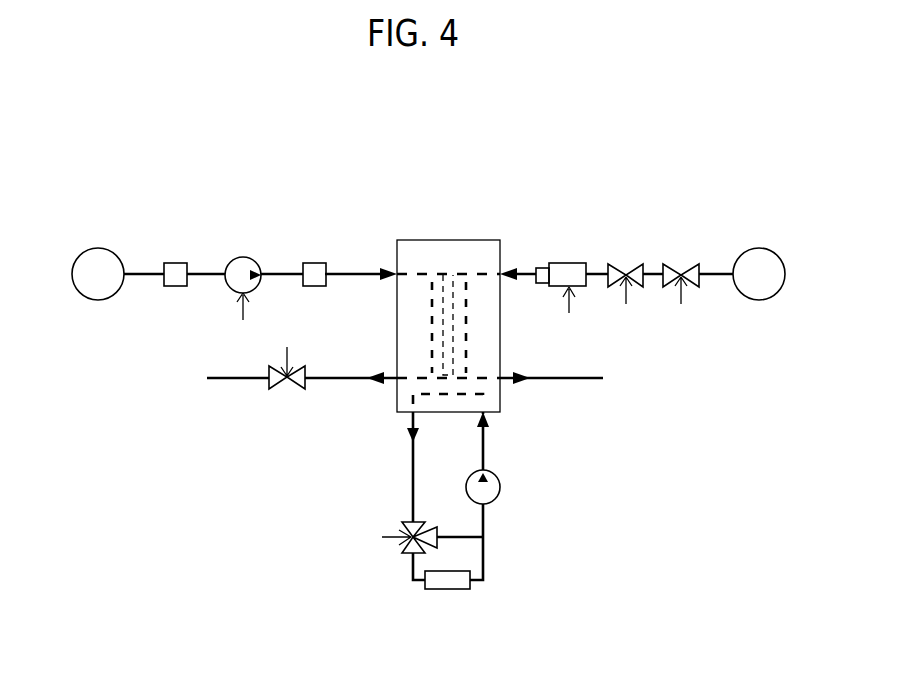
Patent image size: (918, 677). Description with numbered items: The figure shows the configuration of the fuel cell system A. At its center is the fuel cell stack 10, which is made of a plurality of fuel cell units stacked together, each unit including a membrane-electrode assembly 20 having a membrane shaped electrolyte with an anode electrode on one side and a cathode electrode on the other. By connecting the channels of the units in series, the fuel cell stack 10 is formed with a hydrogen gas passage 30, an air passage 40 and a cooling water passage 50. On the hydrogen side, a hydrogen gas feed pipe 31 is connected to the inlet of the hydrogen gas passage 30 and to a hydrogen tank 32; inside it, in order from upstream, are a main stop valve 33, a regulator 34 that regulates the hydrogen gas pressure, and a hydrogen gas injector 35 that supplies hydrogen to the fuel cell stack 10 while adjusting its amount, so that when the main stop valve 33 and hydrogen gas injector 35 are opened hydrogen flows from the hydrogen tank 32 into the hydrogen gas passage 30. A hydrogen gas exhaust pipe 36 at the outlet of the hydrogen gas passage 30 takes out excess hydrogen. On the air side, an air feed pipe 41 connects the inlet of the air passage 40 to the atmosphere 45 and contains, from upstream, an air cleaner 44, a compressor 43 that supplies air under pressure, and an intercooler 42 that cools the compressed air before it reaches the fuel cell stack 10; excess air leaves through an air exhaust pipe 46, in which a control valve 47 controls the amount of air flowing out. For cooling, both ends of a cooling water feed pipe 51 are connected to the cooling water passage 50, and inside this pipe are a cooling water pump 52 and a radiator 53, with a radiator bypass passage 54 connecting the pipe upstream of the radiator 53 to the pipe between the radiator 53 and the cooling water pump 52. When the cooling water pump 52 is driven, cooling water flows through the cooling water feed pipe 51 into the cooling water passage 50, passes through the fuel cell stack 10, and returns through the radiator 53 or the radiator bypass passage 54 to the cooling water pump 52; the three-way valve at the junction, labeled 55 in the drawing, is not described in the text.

The fuel cell system A is at (75, 157).
The fuel cell stack 10 is at (462, 240).
The membrane-electrode assembly 20 is at (432, 345).
The hydrogen gas passage 30 is at (485, 265).
The hydrogen gas feed pipe 31 is at (527, 282).
The hydrogen tank 32 is at (775, 249).
The main stop valve 33 is at (695, 262).
The regulator 34 is at (640, 262).
The hydrogen gas injector 35 is at (578, 262).
The hydrogen gas exhaust pipe 36 is at (550, 381).
The air passage 40 is at (415, 388).
The air feed pipe 41 is at (362, 270).
The intercooler 42 is at (313, 262).
The compressor 43 is at (240, 257).
The air cleaner 44 is at (174, 262).
The atmosphere 45 is at (90, 249).
The air exhaust pipe 46 is at (327, 381).
The control valve 47 is at (278, 390).
The cooling water passage 50 is at (496, 415).
The cooling water feed pipe 51 is at (482, 514).
The cooling water pump 52 is at (500, 500).
The radiator 53 is at (442, 590).
The radiator bypass passage 54 is at (470, 542).
The three-way valve 55 is at (405, 551).